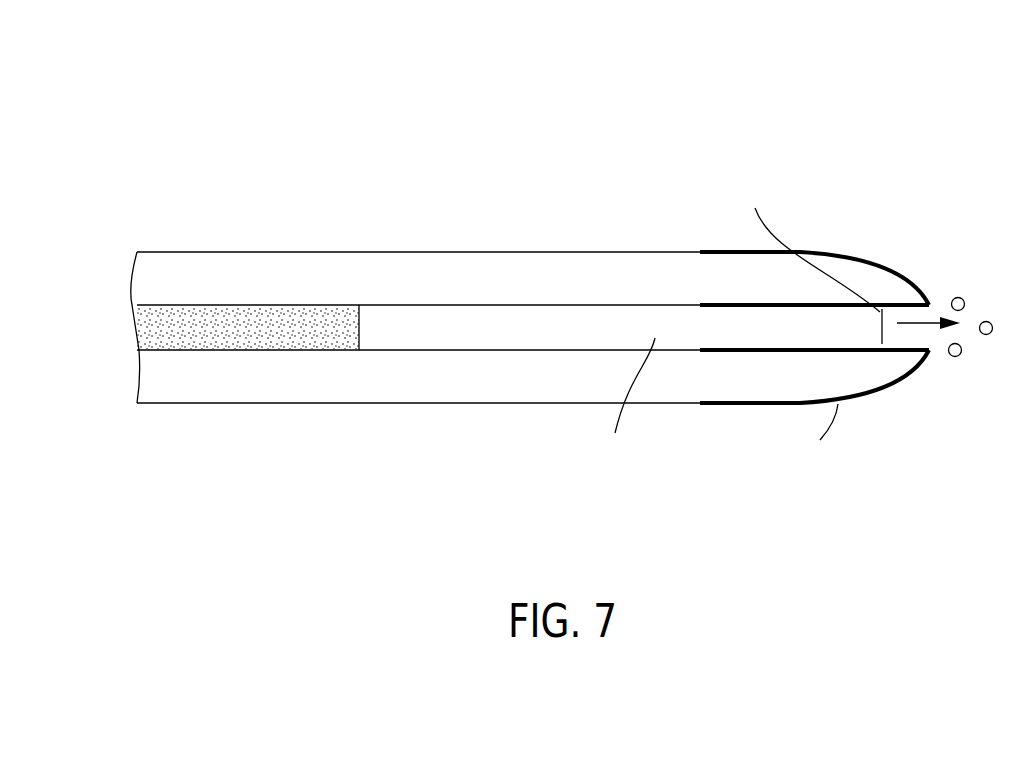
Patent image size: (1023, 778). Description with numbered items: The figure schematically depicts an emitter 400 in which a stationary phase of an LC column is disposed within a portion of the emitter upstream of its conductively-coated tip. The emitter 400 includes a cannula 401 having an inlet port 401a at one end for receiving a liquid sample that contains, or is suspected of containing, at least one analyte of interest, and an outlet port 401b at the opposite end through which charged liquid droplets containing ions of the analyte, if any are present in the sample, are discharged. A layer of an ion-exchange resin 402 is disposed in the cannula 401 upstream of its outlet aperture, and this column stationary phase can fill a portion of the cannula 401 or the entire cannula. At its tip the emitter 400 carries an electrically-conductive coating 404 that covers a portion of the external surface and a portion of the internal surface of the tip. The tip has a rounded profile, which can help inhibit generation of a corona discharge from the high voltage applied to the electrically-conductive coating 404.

The emitter 400 is at (123, 140).
The cannula 401 is at (246, 252).
The inlet port 401a is at (133, 330).
The outlet port 401b is at (942, 290).
The layer of ion-exchange resin 402 is at (288, 305).
The electrically-conductive coating 404 is at (912, 378).